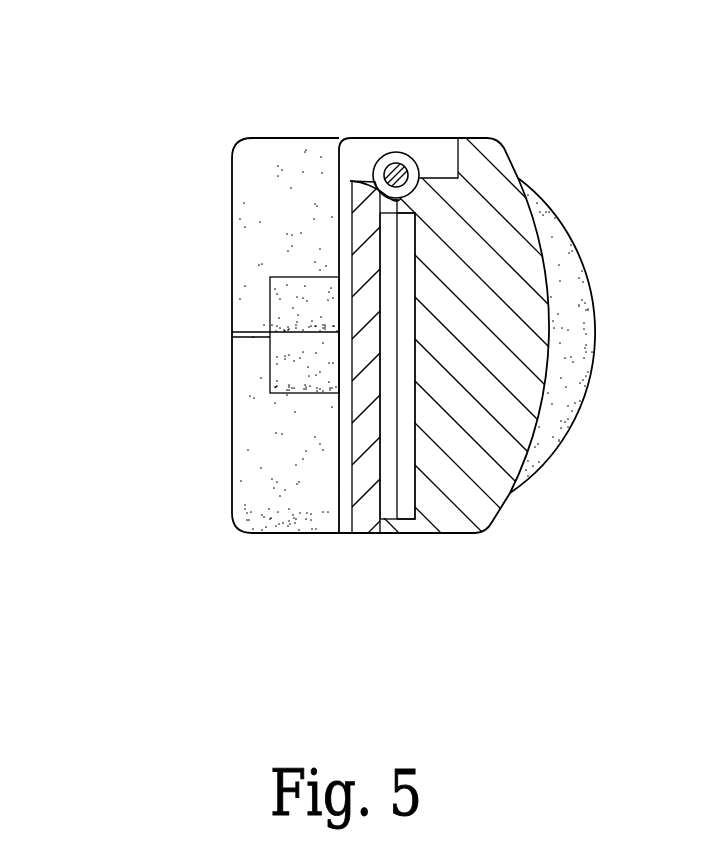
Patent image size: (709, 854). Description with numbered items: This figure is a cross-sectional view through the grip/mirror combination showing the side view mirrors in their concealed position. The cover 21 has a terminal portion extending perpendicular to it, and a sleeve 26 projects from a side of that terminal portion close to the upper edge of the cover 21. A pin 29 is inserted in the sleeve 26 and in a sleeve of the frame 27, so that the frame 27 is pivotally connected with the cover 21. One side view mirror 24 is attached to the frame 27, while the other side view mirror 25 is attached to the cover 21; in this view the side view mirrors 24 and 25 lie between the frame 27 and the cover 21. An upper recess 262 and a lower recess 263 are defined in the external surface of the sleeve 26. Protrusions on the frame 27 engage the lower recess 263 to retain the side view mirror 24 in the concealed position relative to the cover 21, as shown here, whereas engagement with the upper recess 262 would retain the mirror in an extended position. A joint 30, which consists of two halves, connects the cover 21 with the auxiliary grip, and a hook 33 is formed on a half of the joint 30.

The cover 21 is at (530, 350).
The side view mirror 24 is at (388, 507).
The side view mirror 25 is at (405, 485).
The sleeve 26 is at (378, 162).
The upper recess 262 is at (394, 152).
The lower recess 263 is at (350, 181).
The frame 27 is at (360, 433).
The pin 29 is at (417, 163).
The joint 30 is at (242, 467).
The hook 33 is at (297, 360).